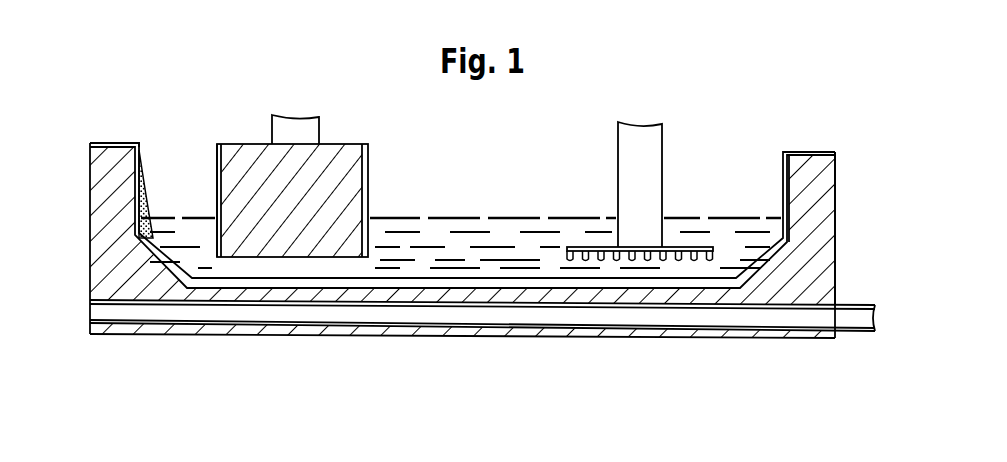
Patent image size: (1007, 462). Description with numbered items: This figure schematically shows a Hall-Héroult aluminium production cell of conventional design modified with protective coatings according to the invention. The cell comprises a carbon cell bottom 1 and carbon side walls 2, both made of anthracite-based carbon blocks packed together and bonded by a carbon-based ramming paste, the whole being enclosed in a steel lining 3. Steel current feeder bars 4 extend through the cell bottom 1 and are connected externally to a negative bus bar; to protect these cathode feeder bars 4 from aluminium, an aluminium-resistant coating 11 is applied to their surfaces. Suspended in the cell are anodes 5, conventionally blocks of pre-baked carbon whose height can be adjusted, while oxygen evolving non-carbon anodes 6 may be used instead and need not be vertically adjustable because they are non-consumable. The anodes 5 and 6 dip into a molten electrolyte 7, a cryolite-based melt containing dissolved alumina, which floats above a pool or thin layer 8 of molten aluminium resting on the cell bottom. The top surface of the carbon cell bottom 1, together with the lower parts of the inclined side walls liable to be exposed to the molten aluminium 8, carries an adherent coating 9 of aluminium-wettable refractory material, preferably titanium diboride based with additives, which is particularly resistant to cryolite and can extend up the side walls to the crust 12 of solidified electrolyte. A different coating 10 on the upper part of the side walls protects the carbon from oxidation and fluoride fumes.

The cell bottom 1 is at (520, 334).
The side walls 2 is at (827, 203).
The steel lining 3 is at (835, 262).
The current feeder bars 4 is at (820, 319).
The anodes 5 is at (333, 198).
The oxygen evolving non-carbon anodes 6 is at (655, 190).
The molten electrolyte 7 is at (455, 230).
The layer of molten aluminium 8 is at (335, 280).
The coating of aluminium-wettable refractory material 9 is at (148, 252).
The oxidation-resisting coating 10 is at (215, 165).
The aluminium-resistant coating 11 is at (245, 328).
The crust of solidified electrolyte 12 is at (148, 200).